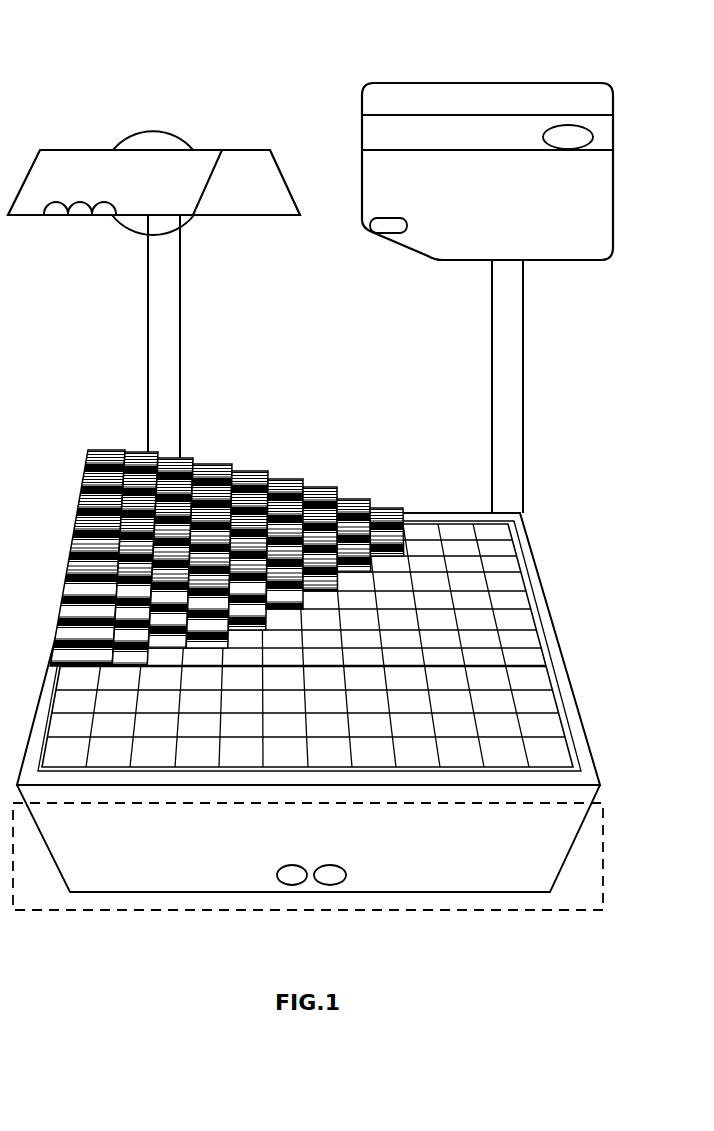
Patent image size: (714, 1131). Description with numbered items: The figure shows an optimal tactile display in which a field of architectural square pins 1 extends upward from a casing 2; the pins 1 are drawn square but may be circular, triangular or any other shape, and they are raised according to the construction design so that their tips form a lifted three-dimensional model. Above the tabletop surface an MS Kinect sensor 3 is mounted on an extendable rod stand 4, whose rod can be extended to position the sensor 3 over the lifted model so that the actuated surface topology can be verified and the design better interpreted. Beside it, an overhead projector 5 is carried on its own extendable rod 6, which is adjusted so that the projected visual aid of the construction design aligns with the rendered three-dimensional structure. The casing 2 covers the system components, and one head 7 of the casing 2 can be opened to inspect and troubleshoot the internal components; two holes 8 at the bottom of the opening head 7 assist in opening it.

The architectural square pins 1 is at (97, 447).
The casing 2 is at (565, 675).
The MS Kinect sensor 3 is at (82, 150).
The extendable rod stand 4 is at (185, 382).
The overhead projector 5 is at (495, 83).
The rod 6 is at (487, 415).
The opening head 7 is at (610, 848).
The holes 8 is at (293, 885).